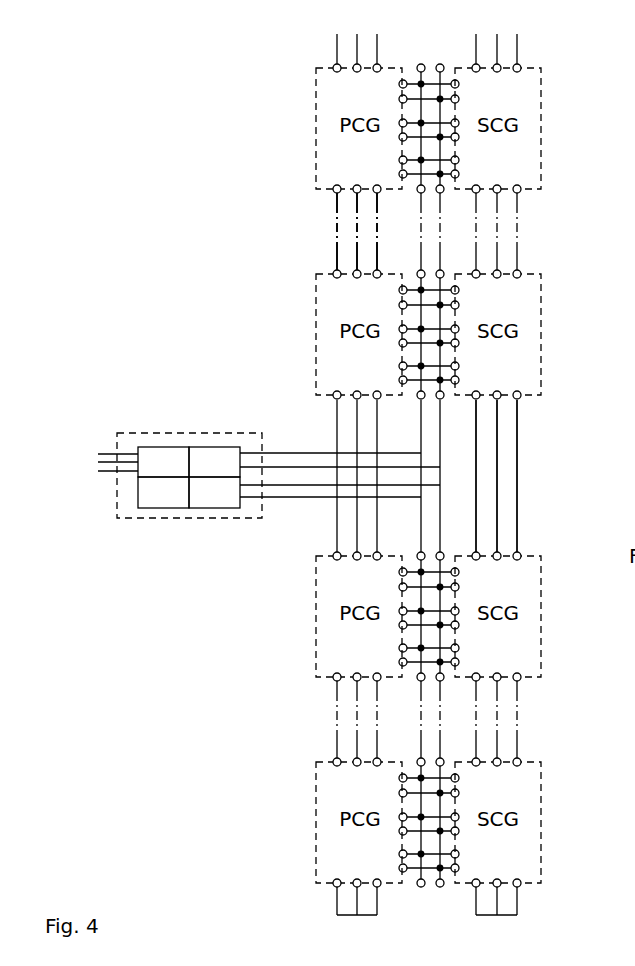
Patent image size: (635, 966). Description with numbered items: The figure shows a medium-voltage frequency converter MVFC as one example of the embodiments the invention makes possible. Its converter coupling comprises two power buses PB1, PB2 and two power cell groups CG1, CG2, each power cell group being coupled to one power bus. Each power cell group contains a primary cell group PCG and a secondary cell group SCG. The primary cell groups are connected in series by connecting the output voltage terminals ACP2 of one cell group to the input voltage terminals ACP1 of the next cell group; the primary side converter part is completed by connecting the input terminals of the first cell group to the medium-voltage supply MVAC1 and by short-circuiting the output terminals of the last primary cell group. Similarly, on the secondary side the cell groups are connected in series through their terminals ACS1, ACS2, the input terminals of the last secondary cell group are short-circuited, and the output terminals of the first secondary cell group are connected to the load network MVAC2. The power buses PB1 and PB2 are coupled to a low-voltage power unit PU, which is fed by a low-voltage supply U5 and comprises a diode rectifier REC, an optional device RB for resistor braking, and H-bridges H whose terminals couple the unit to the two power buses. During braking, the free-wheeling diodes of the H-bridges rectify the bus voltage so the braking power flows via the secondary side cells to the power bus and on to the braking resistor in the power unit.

The medium-voltage frequency converter MVFC is at (213, 78).
The medium-voltage supply MVAC1 is at (357, 36).
The load network MVAC2 is at (497, 36).
The primary cell group PCG is at (359, 475).
The secondary cell group SCG is at (498, 475).
The first power cell group CG1 is at (555, 67).
The second power cell group CG2 is at (555, 557).
The input voltage terminals ACP1 is at (332, 271).
The output voltage terminals ACP2 is at (332, 192).
The secondary side input terminals ACS1 is at (523, 400).
The secondary side output terminals ACS2 is at (523, 553).
The first power bus PB1 is at (297, 473).
The second power bus PB2 is at (278, 478).
The low-voltage power unit PU is at (189, 462).
The supply voltage U5 is at (94, 461).
The diode rectifier REC is at (163, 462).
The device for resistor braking RB is at (163, 492).
The H-bridge H is at (214, 477).